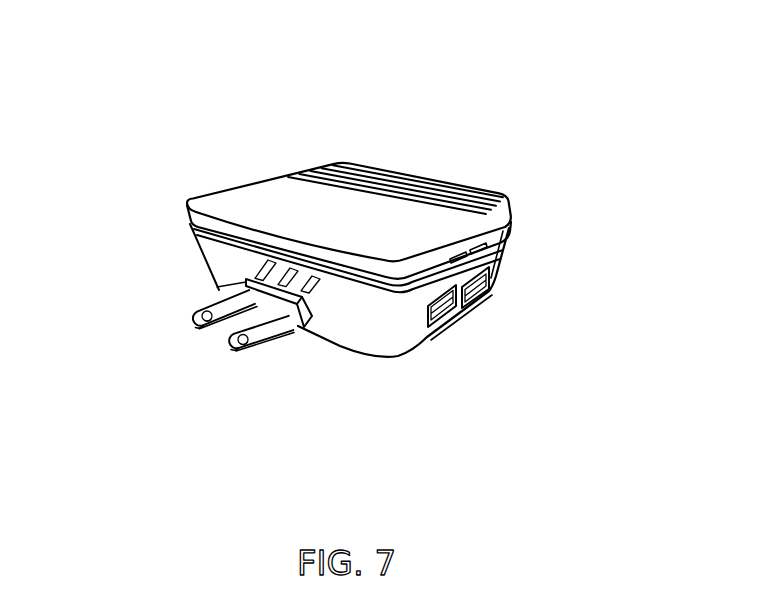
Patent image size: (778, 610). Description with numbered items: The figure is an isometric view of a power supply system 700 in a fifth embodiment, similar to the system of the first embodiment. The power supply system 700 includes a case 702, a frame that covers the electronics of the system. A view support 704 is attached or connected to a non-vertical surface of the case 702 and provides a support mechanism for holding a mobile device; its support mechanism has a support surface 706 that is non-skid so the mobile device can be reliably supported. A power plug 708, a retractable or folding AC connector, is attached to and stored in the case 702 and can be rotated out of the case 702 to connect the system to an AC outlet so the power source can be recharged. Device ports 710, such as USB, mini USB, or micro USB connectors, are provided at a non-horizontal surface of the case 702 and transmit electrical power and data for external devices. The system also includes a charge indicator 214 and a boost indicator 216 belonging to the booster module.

The power supply system 700 is at (224, 93).
The case 702 is at (337, 358).
The view support 704 is at (484, 178).
The support surface 706 is at (402, 178).
The power plug 708 is at (176, 305).
The device ports 710 is at (493, 312).
The charge indicator 214 is at (487, 280).
The boost indicator 216 is at (490, 255).